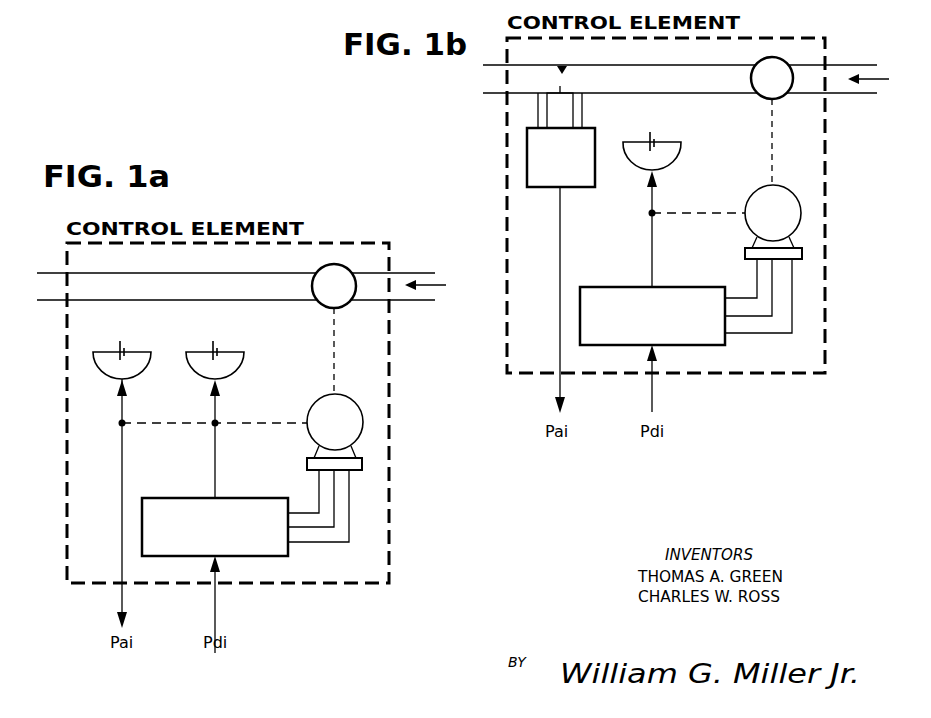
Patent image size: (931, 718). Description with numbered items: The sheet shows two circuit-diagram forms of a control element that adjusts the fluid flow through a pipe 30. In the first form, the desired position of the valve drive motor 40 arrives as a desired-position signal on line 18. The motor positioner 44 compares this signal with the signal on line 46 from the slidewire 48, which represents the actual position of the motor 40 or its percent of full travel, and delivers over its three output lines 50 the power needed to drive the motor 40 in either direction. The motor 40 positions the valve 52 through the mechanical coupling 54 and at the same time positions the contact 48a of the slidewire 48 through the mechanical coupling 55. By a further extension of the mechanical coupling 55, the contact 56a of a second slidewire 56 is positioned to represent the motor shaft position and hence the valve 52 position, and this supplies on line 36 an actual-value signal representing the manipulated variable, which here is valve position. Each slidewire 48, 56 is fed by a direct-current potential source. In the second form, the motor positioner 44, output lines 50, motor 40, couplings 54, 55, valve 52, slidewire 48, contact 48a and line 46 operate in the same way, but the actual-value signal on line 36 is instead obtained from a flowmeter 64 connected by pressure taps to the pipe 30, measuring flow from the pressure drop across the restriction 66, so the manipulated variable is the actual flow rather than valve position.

In FIG. 1A, the pipe 30 is at (398, 272).
In FIG. 1B, the pipe 30 is at (838, 64).
In FIG. 1A, the valve 52 is at (323, 306).
In FIG. 1B, the valve 52 is at (758, 96).
In FIG. 1A, the mechanical coupling 54 is at (345, 368).
In FIG. 1B, the mechanical coupling 54 is at (777, 143).
In FIG. 1A, the valve drive motor 40 is at (360, 409).
In FIG. 1B, the valve drive motor 40 is at (799, 199).
In FIG. 1A, the mechanical coupling 55 is at (288, 418).
In FIG. 1B, the mechanical coupling 55 is at (728, 215).
In FIG. 1A, the output lines 50 is at (312, 499).
In FIG. 1B, the output lines 50 is at (752, 282).
In FIG. 1A, the motor positioner 44 is at (262, 497).
In FIG. 1B, the motor positioner 44 is at (605, 287).
In FIG. 1A, the line 46 is at (212, 451).
In FIG. 1B, the line 46 is at (649, 252).
In FIG. 1A, the slidewire 48 is at (240, 365).
In FIG. 1B, the slidewire 48 is at (681, 150).
In FIG. 1A, the contact 48a is at (213, 401).
In FIG. 1B, the contact 48a is at (650, 198).
In FIG. 1A, the slidewire 56 is at (145, 365).
In FIG. 1A, the contact 56a is at (120, 401).
In FIG. 1A, the line 36 is at (126, 608).
In FIG. 1B, the line 36 is at (564, 397).
In FIG. 1A, the line 18 is at (219, 608).
In FIG. 1B, the line 18 is at (656, 397).
In FIG. 1B, the flowmeter 64 is at (597, 140).
In FIG. 1B, the restriction 66 is at (563, 70).